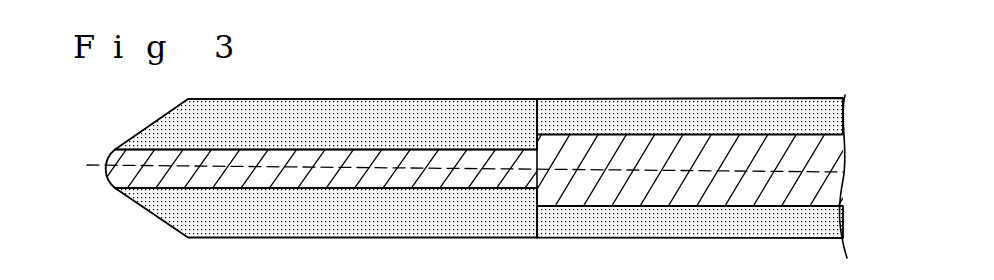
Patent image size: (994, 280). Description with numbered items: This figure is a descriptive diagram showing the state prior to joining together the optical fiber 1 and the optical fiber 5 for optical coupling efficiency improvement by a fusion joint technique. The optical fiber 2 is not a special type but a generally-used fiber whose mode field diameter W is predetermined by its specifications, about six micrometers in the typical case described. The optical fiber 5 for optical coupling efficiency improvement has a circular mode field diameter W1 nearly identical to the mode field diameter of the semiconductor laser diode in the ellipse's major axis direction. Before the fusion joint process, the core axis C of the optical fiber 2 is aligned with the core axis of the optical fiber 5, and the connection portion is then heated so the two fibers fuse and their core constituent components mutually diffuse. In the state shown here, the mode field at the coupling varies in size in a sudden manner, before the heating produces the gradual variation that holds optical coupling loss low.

The optical fiber 1 is at (486, 160).
The optical fiber 2 is at (711, 143).
The optical fiber for optical coupling efficiency improvement 5 is at (378, 111).
The core axis C is at (370, 180).
The mode field diameter W is at (632, 206).
The mode field diameter W1 is at (478, 188).